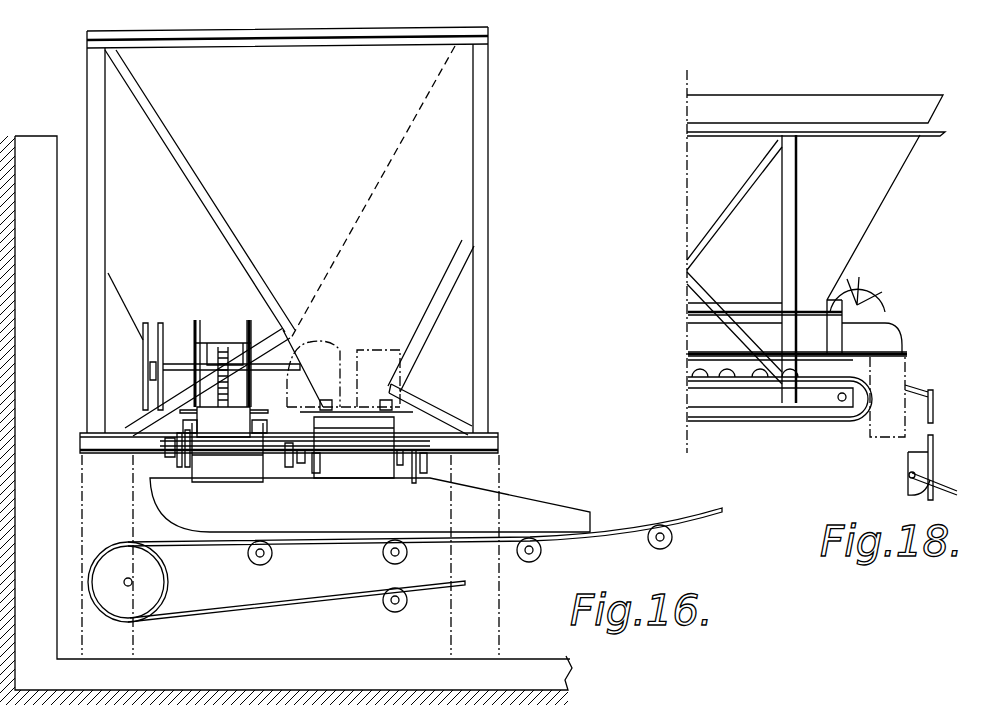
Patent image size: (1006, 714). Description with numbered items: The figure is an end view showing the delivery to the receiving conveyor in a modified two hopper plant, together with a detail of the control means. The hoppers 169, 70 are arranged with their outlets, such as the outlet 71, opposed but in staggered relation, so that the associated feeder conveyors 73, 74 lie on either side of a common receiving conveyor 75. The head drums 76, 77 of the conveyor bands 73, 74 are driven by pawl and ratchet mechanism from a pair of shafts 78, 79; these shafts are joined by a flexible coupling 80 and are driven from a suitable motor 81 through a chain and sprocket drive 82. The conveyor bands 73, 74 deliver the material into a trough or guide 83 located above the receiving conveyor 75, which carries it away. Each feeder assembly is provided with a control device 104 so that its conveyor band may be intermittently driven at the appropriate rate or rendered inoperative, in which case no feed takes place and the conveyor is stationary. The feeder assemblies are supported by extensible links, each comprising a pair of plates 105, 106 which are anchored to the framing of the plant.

In FIG. 16, the hopper 70 is at (340, 192).
In FIG. 16, the hopper 169 is at (187, 262).
In FIG. 16, the outlet 71 is at (213, 350).
In FIG. 16, the motor 81 is at (367, 355).
In FIG. 16, the chain and sprocket drive 82 is at (418, 396).
In FIG. 16, the shaft 78 is at (187, 463).
In FIG. 16, the head drum 76 is at (190, 462).
In FIG. 16, the feeder conveyor 73 is at (250, 467).
In FIG. 16, the flexible coupling 80 is at (291, 468).
In FIG. 16, the head drum 77 is at (316, 462).
In FIG. 16, the feeder conveyor 74 is at (372, 460).
In FIG. 16, the shaft 79 is at (413, 455).
In FIG. 16, the trough or guide 83 is at (537, 515).
In FIG. 16, the receiving conveyor 75 is at (615, 532).
In FIG. 18, the plate 105 is at (800, 323).
In FIG. 18, the plate 106 is at (864, 291).
In FIG. 18, the control device 104 is at (930, 427).